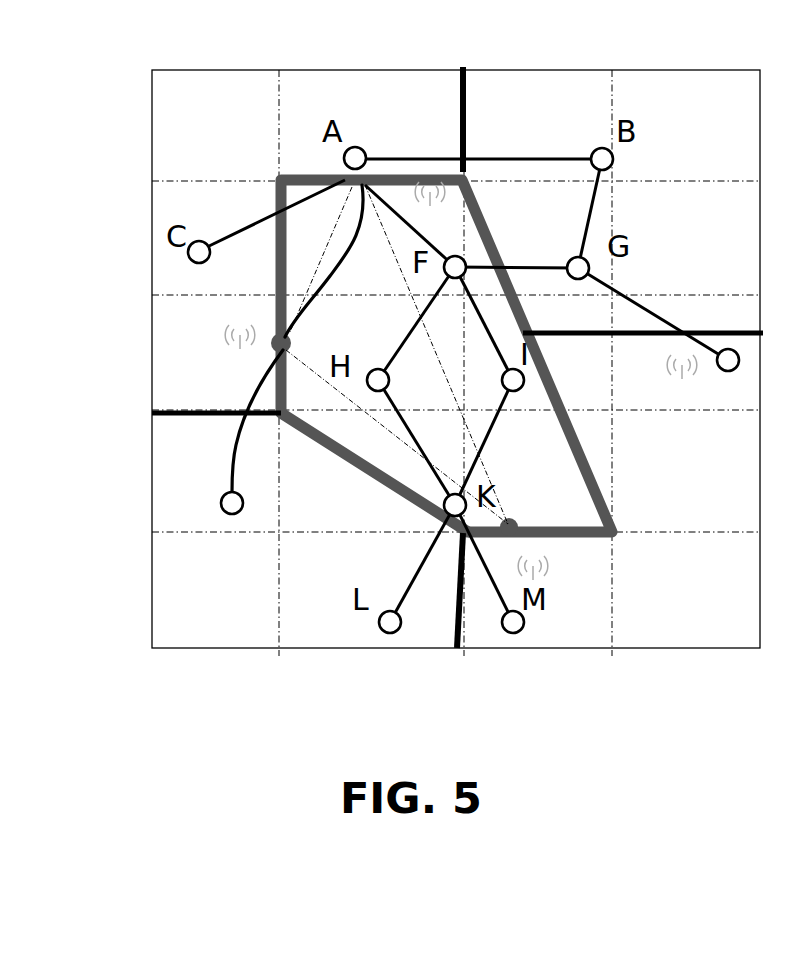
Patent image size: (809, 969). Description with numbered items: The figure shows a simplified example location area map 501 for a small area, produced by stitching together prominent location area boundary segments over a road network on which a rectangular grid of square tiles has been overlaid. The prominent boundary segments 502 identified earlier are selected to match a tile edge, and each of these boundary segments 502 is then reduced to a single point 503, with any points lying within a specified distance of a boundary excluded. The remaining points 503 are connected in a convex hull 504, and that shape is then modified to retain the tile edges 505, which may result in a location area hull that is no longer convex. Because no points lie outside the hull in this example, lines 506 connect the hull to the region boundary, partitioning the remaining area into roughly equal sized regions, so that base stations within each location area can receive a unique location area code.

The location area map 501 is at (152, 93).
The prominent boundary segments 502 is at (275, 316).
The single point 503 is at (268, 348).
The convex hull 504 is at (309, 281).
The tile edges 505 is at (330, 450).
The lines 506 is at (462, 92).